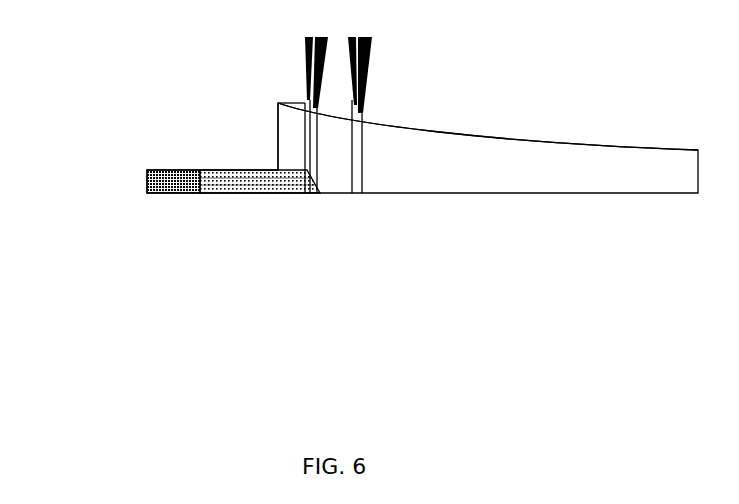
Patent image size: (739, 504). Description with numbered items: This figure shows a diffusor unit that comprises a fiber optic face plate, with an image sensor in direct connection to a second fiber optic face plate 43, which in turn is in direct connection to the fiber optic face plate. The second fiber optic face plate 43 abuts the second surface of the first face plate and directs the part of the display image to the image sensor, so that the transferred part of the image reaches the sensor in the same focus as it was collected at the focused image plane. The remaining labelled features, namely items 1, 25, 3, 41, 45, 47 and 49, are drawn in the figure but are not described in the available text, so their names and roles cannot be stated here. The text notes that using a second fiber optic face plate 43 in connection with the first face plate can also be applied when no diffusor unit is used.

The blade 1 is at (622, 167).
The airfoil upper surface 25 is at (502, 138).
The root block 3 is at (134, 179).
The second fiber optic face plate 43 is at (255, 206).
The transition region 41 is at (332, 182).
The leading edge wedge 45 is at (296, 96).
The trailing wedge 47 is at (290, 116).
The blade root edge 49 is at (290, 133).